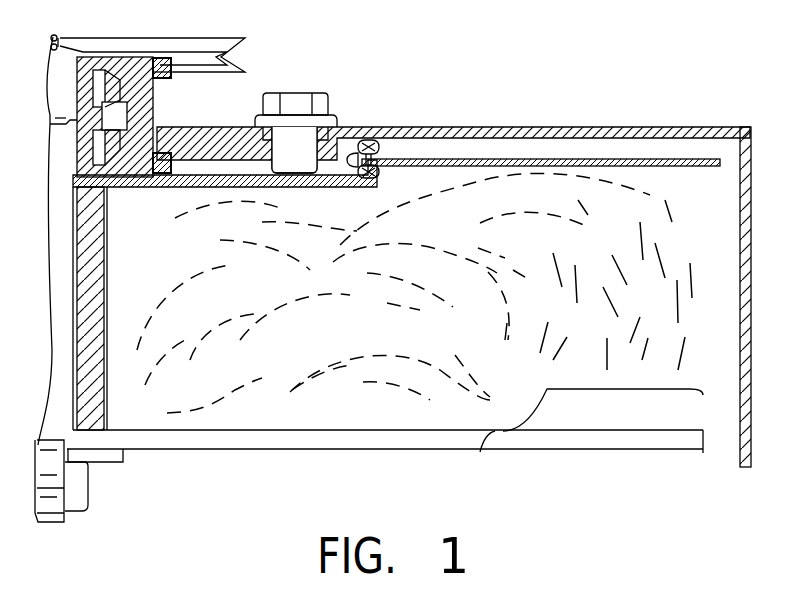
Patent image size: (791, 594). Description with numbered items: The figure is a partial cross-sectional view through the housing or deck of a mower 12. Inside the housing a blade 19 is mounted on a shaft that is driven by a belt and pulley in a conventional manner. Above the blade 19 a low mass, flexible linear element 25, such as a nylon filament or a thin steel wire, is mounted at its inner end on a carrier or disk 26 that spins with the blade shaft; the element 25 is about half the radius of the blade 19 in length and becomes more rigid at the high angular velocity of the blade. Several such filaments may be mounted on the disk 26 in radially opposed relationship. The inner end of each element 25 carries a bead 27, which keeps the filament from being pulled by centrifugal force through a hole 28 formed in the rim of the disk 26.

The mower 12 is at (659, 103).
The blade 19 is at (540, 455).
The linear element 25 is at (522, 160).
The carrier or disk 26 is at (253, 183).
The bead 27 is at (353, 155).
The hole 28 is at (373, 142).